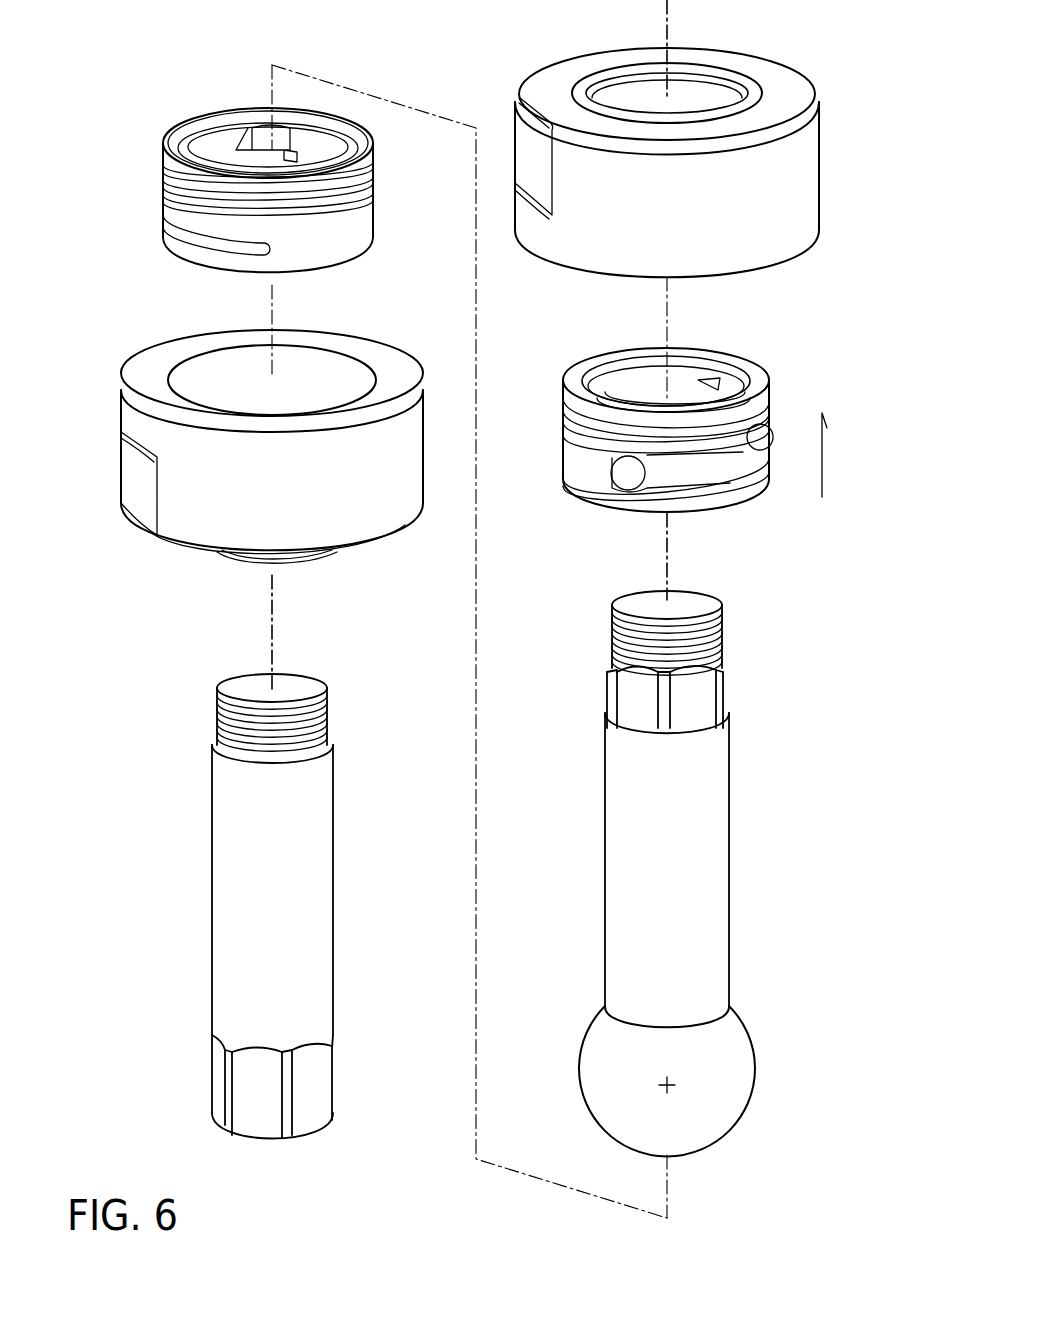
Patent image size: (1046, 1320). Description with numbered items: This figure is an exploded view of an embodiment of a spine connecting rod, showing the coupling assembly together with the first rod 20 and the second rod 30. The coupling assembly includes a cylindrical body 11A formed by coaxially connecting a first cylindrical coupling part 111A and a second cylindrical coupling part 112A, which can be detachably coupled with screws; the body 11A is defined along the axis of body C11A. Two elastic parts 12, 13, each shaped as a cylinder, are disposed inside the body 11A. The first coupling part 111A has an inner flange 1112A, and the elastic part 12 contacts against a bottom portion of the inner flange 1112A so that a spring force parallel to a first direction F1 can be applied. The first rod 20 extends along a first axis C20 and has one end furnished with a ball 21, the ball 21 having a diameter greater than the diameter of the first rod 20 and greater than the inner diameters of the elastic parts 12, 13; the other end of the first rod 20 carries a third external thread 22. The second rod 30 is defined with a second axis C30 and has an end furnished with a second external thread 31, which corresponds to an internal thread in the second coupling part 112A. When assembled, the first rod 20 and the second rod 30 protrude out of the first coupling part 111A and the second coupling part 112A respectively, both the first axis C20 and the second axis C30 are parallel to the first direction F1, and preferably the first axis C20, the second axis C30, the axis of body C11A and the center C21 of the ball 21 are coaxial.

The elastic part 13 is at (186, 107).
The body 11A is at (470, 284).
The first coupling part 111A is at (649, 162).
The second coupling part 112A is at (288, 424).
The inner flange 1112A is at (623, 84).
The axis of body C11A is at (667, 18).
The elastic part 12 is at (764, 359).
The first direction F1 is at (839, 455).
The first axis C20 is at (667, 568).
The first rod 20 is at (677, 873).
The third external thread 22 is at (610, 641).
The ball 21 is at (737, 1085).
The center of the ball C21 is at (661, 1072).
The second axis C30 is at (272, 652).
The second rod 30 is at (232, 906).
The second external thread 31 is at (215, 724).